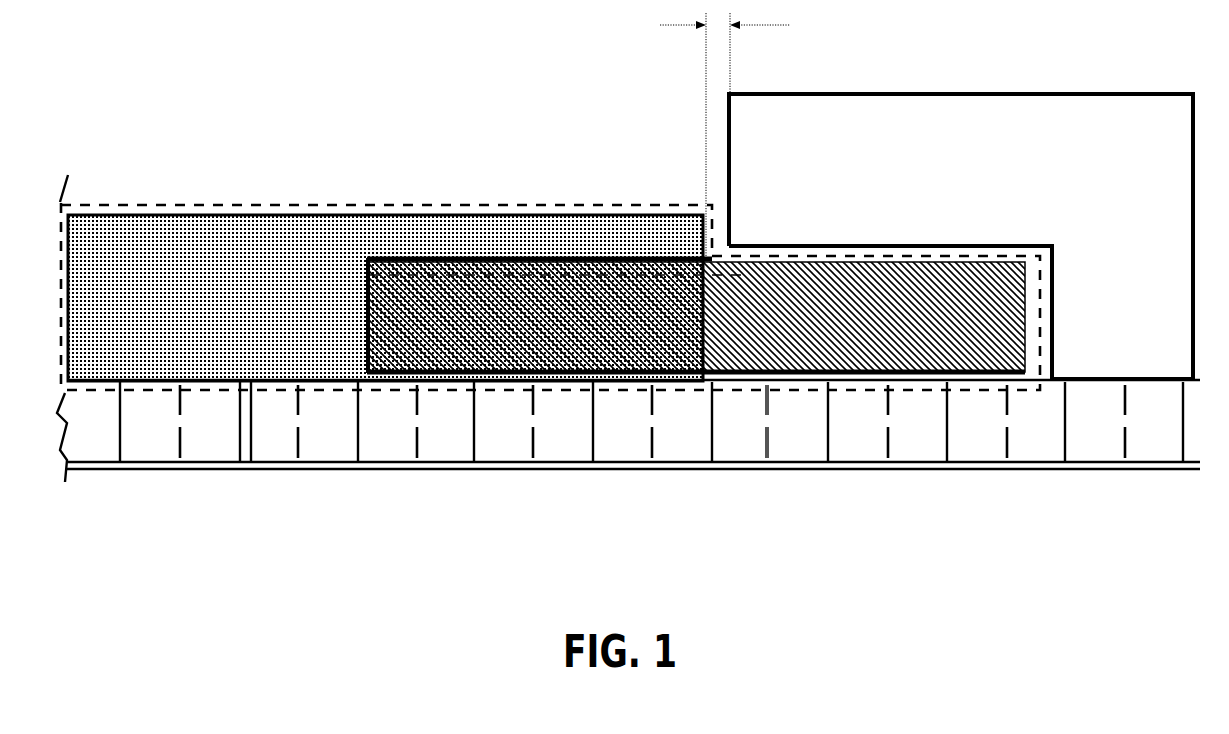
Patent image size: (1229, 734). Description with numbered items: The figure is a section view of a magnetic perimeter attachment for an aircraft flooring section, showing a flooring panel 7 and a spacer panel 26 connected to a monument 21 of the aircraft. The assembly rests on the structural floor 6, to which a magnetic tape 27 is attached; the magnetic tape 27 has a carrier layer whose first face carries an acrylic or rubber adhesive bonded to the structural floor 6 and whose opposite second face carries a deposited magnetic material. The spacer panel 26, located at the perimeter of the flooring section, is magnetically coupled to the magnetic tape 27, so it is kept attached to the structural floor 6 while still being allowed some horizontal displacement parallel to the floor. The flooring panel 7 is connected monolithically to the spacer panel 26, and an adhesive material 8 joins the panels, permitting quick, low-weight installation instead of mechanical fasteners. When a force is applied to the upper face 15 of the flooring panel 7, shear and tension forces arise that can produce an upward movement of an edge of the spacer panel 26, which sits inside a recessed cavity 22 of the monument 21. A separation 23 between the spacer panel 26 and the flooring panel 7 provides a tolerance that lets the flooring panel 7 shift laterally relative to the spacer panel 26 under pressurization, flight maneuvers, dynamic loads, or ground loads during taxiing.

The structural floor 6 is at (630, 472).
The upper face 15 is at (282, 205).
The flooring panel 7 is at (645, 205).
The adhesive material 8 is at (513, 258).
The monument 21 is at (774, 94).
The recessed cavity 22 is at (870, 248).
The separation 23 is at (705, 35).
The spacer panel 26 is at (1035, 300).
The magnetic tape 27 is at (1054, 346).